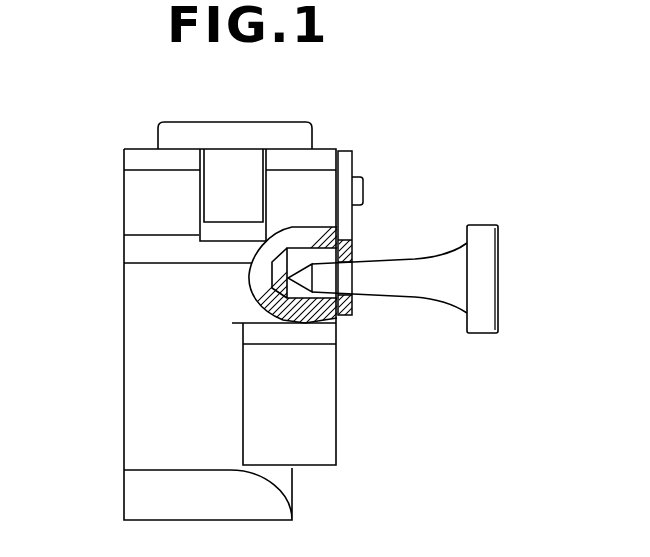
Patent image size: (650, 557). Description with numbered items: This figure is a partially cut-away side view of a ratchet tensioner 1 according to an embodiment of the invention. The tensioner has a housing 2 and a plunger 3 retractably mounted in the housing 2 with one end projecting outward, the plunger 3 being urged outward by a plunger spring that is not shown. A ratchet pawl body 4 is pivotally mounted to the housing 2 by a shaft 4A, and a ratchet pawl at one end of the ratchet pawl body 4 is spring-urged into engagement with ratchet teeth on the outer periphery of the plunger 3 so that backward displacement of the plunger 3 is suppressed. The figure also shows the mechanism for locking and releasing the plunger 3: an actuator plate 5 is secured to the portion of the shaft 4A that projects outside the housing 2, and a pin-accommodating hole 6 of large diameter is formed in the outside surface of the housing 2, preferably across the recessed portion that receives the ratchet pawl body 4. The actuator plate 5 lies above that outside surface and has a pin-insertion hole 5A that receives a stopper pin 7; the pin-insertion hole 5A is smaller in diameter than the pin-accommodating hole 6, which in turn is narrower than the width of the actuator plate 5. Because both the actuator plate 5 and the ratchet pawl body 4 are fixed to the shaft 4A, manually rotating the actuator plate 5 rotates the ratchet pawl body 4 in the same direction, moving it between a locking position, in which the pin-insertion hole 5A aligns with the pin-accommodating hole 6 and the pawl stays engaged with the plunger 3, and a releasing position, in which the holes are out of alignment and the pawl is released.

The ratchet tensioner 1 is at (363, 128).
The housing 2 is at (170, 363).
The plunger 3 is at (190, 135).
The ratchet pawl body 4 is at (234, 170).
The shaft 4A is at (363, 198).
The actuator plate 5 is at (347, 163).
The pin-insertion hole 5A is at (353, 297).
The pin-accommodating hole 6 is at (307, 325).
The stopper pin 7 is at (490, 282).